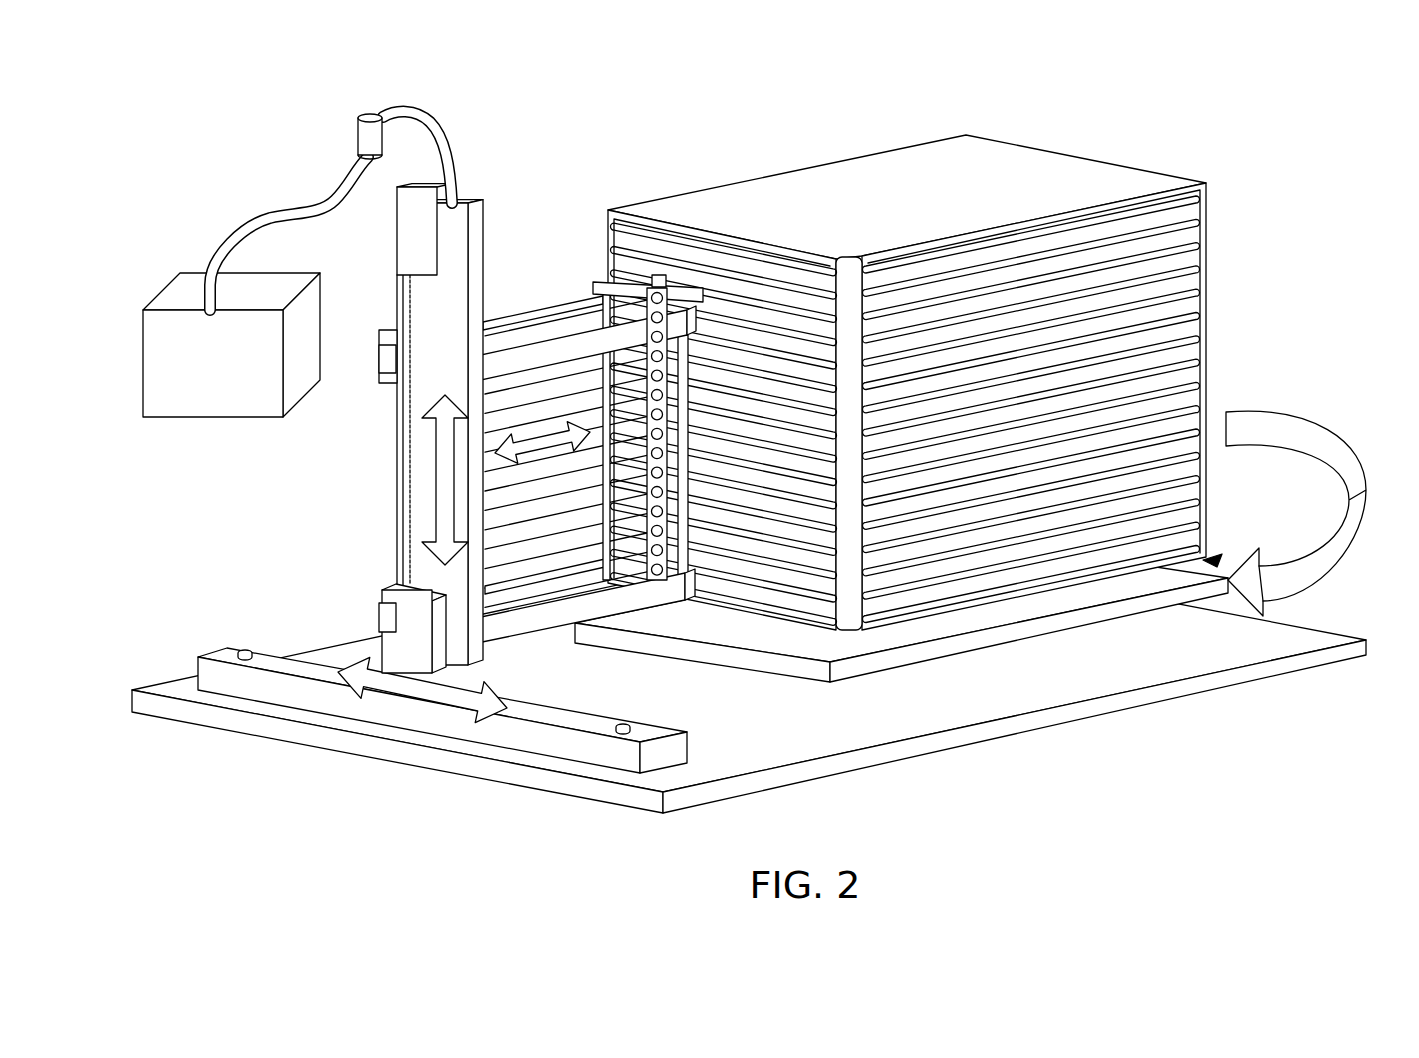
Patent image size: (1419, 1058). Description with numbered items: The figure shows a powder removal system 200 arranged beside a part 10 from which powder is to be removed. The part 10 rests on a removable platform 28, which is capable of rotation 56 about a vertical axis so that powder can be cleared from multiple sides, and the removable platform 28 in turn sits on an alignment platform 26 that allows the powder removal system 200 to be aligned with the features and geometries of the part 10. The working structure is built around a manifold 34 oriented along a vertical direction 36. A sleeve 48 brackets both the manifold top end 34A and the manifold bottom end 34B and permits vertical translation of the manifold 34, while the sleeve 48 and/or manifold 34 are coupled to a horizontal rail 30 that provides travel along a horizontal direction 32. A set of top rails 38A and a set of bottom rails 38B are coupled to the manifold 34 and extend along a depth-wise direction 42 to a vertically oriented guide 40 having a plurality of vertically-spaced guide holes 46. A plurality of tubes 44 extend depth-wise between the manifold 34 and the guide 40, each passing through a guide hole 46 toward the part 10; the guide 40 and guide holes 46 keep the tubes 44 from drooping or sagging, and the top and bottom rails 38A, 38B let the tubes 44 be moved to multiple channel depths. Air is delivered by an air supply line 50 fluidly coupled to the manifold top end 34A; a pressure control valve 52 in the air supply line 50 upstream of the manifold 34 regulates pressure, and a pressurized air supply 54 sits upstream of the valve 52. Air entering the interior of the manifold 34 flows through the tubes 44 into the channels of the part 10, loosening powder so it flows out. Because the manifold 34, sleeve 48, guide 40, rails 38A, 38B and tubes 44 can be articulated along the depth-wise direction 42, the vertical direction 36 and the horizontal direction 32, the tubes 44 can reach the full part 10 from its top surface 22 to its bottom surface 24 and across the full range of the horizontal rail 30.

The part 10 is at (773, 468).
The top surface 22 is at (1025, 166).
The bottom surface 24 is at (1222, 557).
The alignment platform 26 is at (1022, 698).
The removable platform 28 is at (1017, 610).
The horizontal rail 30 is at (602, 753).
The horizontal direction 32 is at (420, 690).
The manifold 34 is at (432, 385).
The manifold top end 34A is at (460, 225).
The manifold bottom end 34B is at (428, 585).
The vertical direction 36 is at (440, 512).
The top rails 38A is at (565, 335).
The bottom rails 38B is at (382, 616).
The guide 40 is at (600, 278).
The depth-wise direction 42 is at (487, 447).
The tubes 44 is at (517, 405).
The guide holes 46 is at (656, 276).
The sleeve 48 is at (400, 600).
The air supply line 50 is at (400, 110).
The pressure control valve 52 is at (365, 112).
The pressurized air supply 54 is at (163, 292).
The rotation 56 is at (1365, 575).
The powder removal system 200 is at (411, 360).